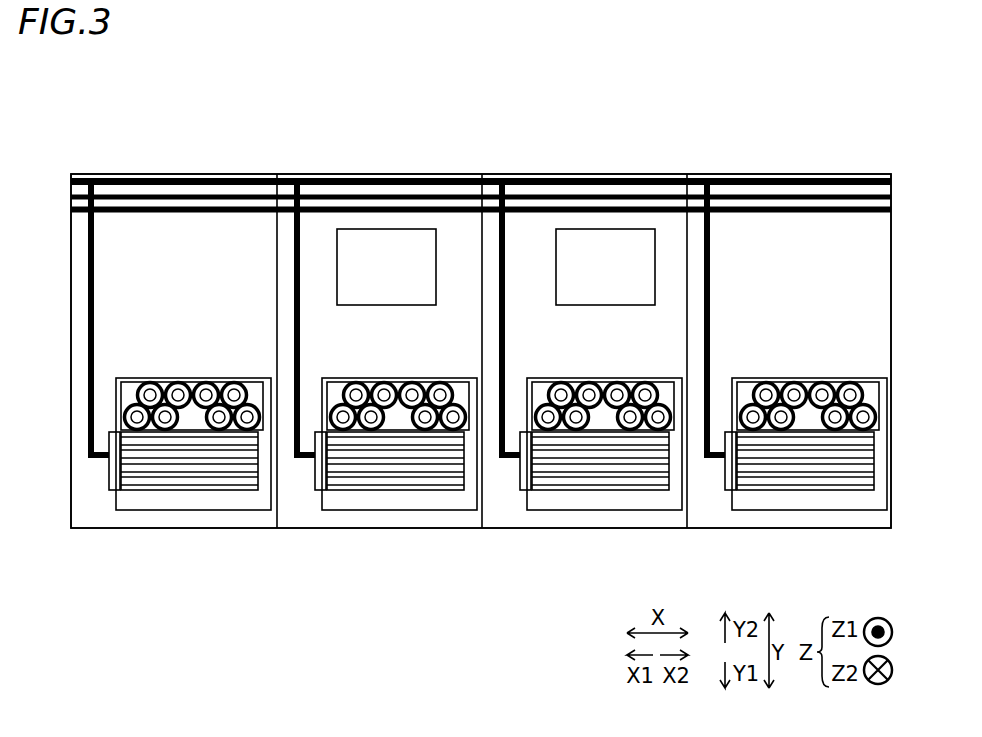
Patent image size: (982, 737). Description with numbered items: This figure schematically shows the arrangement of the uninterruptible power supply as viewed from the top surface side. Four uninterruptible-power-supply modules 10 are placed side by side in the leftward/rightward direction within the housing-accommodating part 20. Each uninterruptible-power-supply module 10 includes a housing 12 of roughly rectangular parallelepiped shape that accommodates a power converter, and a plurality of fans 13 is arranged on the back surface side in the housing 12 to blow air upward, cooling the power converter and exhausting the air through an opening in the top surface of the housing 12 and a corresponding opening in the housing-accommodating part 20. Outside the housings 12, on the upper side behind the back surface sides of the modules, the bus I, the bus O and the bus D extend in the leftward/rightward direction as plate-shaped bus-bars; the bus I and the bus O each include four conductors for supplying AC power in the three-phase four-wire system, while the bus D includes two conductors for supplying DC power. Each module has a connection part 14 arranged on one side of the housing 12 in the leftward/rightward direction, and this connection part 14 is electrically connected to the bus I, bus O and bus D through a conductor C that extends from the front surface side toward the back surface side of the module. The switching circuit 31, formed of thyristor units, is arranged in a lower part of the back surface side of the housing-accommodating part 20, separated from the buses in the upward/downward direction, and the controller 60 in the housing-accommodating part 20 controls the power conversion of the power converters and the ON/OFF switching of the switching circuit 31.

The housing-accommodating part 20 is at (809, 161).
The uninterruptible-power-supply module 10 is at (205, 517).
The housing 12 is at (138, 512).
The fans 13 is at (163, 384).
The connection part 14 is at (108, 477).
The controller 60 is at (400, 229).
The switching circuit 31 is at (622, 229).
The bus D is at (127, 178).
The bus I is at (160, 194).
The bus O is at (202, 206).
The conductor C is at (88, 325).